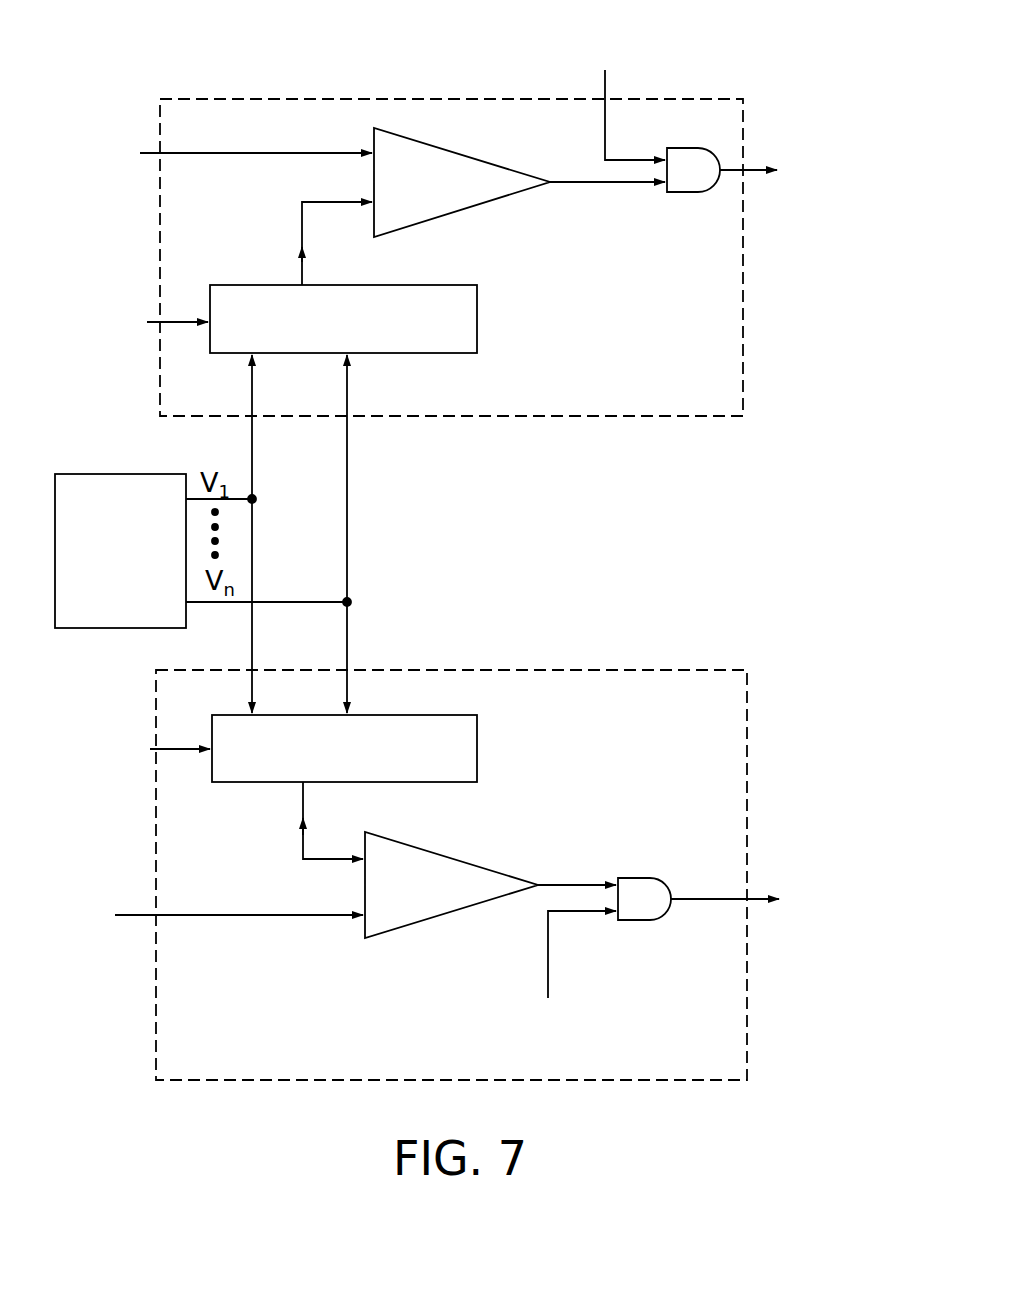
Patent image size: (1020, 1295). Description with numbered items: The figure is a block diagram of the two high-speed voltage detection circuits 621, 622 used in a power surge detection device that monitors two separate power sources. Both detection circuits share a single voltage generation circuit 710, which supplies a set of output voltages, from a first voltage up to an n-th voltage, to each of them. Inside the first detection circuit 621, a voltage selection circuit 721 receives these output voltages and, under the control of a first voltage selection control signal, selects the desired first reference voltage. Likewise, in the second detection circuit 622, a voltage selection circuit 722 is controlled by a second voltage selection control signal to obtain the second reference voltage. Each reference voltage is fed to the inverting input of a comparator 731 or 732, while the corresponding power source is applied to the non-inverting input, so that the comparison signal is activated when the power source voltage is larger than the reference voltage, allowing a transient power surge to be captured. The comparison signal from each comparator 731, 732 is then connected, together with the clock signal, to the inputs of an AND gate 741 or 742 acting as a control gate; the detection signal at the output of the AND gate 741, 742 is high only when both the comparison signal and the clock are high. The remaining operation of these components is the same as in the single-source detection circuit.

The high-speed voltage detection circuit 621 is at (490, 99).
The high-speed voltage detection circuit 622 is at (576, 669).
The voltage generation circuit 710 is at (118, 474).
The voltage selection circuit 721 is at (477, 322).
The voltage selection circuit 722 is at (477, 745).
The comparator 731 is at (452, 213).
The comparator 732 is at (455, 858).
The AND gate 741 is at (682, 192).
The AND gate 742 is at (637, 878).